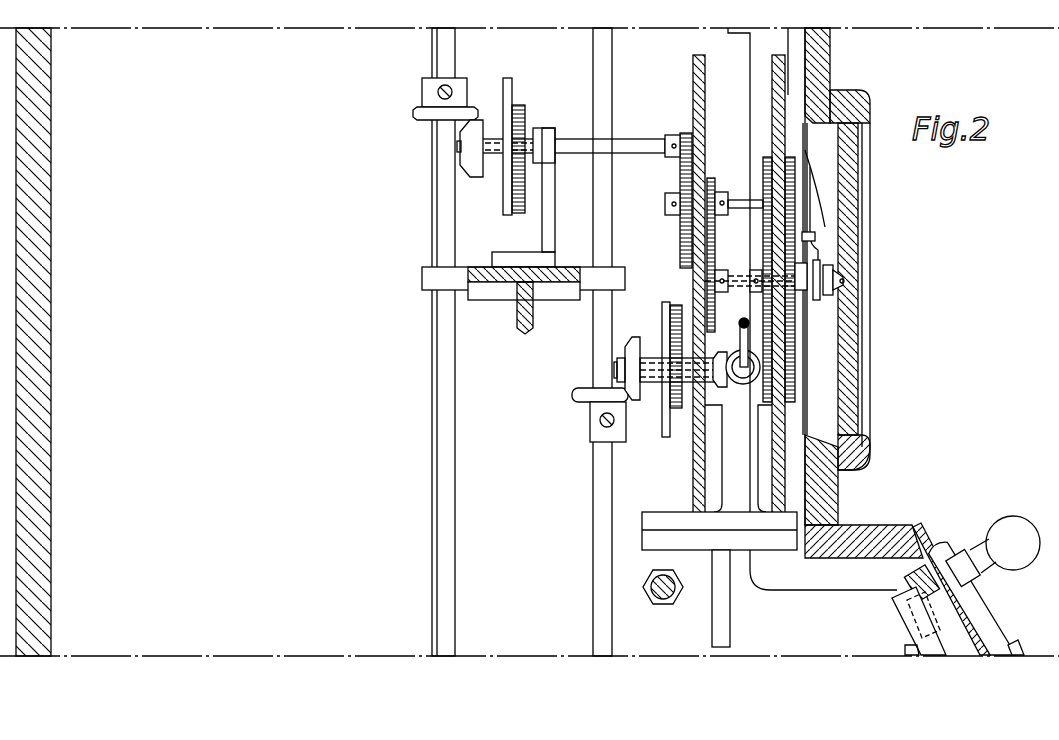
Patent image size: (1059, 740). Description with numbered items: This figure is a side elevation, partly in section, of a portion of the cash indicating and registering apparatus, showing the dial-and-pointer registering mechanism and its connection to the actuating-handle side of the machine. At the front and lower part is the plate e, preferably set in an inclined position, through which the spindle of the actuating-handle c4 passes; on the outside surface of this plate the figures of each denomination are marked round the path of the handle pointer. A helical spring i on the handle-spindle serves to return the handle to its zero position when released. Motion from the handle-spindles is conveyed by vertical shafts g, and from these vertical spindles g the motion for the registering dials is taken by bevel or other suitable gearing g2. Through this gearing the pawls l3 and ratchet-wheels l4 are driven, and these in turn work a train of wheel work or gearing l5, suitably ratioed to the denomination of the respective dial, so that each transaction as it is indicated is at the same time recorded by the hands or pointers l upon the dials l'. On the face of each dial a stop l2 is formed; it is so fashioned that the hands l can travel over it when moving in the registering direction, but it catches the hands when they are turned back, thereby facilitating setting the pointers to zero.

The vertical shafts g is at (448, 48).
The bevel gearing g2 is at (420, 120).
The pawls l3 is at (678, 323).
The ratchet-wheels l4 is at (594, 258).
The train of wheel work or gearing l5 is at (726, 267).
The hands or pointers l is at (819, 214).
The dials l' is at (816, 177).
The stop l2 is at (815, 236).
The plate e is at (913, 537).
The actuating-handle c4 is at (984, 585).
The helical springs i is at (916, 647).